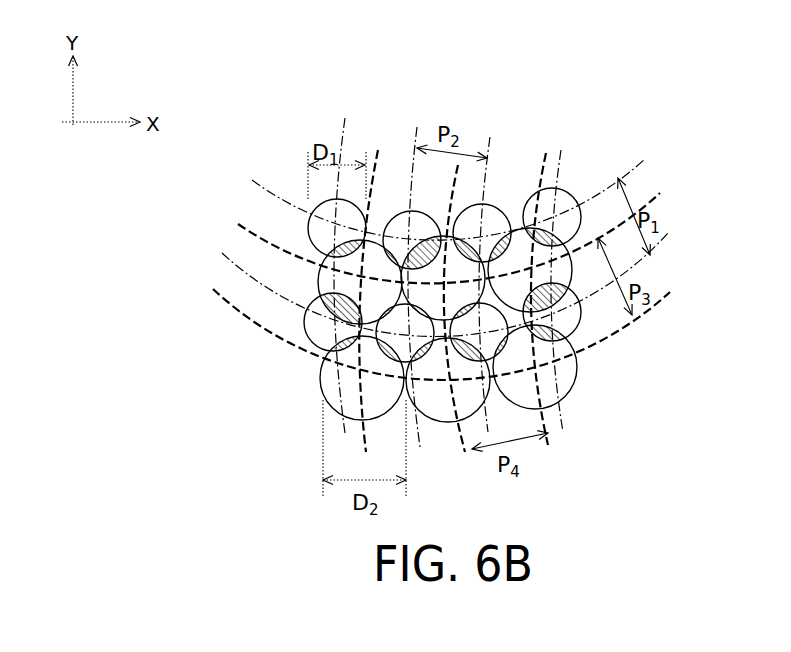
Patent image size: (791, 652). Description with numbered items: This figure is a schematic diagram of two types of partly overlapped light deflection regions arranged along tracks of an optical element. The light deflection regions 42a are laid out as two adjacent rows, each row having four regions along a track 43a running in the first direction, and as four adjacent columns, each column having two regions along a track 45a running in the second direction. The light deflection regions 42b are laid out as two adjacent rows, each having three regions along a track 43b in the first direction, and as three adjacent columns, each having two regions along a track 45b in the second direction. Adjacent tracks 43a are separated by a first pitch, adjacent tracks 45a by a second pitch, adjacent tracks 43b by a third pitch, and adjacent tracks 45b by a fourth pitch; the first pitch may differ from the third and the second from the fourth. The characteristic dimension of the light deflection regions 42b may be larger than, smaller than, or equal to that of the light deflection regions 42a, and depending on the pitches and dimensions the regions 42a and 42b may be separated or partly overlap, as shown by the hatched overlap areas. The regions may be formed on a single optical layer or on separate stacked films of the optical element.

The light deflection region 42a is at (577, 194).
The light deflection region 42b is at (573, 280).
The track 43a is at (645, 157).
The track 43b is at (650, 195).
The track 45a is at (487, 158).
The track 45b is at (378, 182).